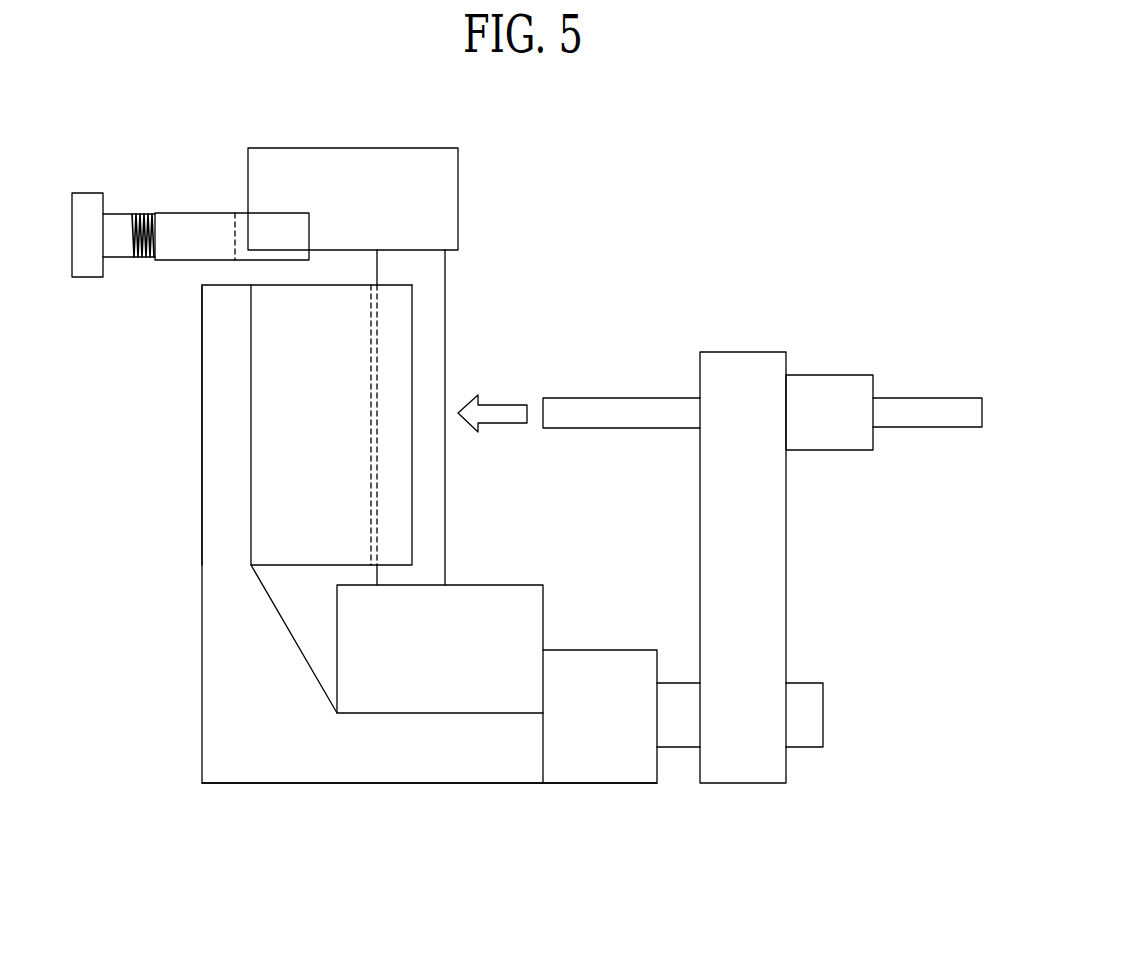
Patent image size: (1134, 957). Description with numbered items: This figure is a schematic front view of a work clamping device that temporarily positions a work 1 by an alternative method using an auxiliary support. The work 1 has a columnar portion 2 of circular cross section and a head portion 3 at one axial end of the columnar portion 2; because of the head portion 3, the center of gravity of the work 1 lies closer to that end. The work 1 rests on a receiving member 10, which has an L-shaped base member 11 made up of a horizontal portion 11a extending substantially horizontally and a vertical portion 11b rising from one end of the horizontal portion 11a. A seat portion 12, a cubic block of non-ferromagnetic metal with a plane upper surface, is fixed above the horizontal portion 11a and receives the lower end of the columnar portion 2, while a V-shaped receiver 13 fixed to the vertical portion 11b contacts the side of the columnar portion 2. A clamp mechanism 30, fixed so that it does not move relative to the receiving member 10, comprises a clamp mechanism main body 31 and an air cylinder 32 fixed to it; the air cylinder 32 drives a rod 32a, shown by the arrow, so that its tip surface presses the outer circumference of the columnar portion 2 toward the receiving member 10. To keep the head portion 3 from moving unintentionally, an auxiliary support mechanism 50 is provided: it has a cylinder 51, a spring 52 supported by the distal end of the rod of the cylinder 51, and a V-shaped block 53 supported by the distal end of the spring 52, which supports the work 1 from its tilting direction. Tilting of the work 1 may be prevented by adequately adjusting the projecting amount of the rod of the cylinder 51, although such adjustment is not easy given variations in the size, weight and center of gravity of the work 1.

The work 1 is at (318, 136).
The columnar portion 2 is at (445, 458).
The head portion 3 is at (458, 200).
The receiving member 10 is at (188, 594).
The L-shaped base member 11 is at (213, 690).
The horizontal portion 11a is at (398, 783).
The vertical portion 11b is at (202, 508).
The seat portion 12 is at (543, 615).
The V-shaped receiver 13 is at (347, 285).
The clamp mechanism 30 is at (800, 566).
The clamp mechanism main body 31 is at (786, 631).
The air cylinder 32 is at (820, 375).
The rod 32a is at (632, 398).
The auxiliary support mechanism 50 is at (191, 200).
The cylinder 51 is at (90, 192).
The spring 52 is at (140, 212).
The V-shaped block 53 is at (172, 262).